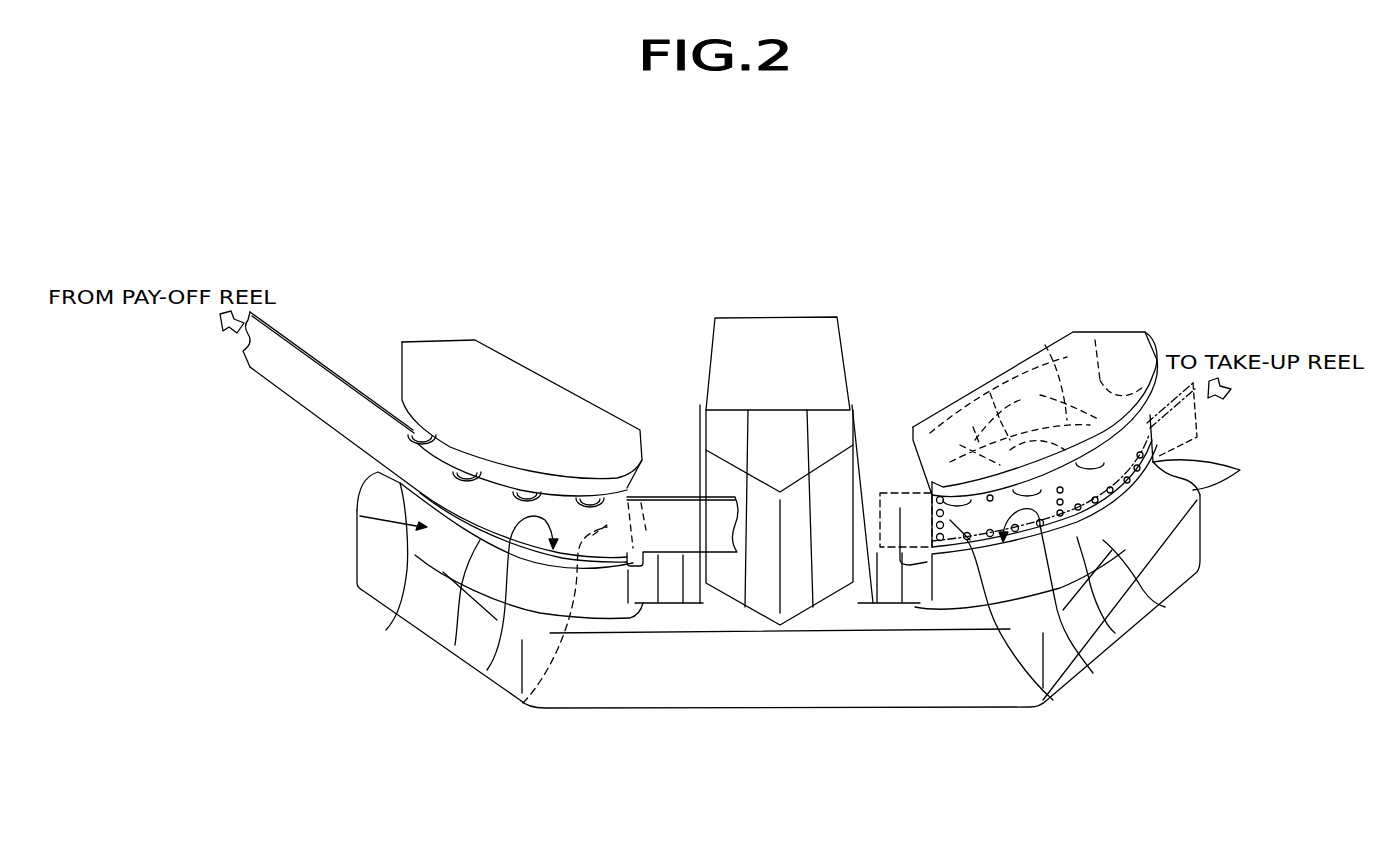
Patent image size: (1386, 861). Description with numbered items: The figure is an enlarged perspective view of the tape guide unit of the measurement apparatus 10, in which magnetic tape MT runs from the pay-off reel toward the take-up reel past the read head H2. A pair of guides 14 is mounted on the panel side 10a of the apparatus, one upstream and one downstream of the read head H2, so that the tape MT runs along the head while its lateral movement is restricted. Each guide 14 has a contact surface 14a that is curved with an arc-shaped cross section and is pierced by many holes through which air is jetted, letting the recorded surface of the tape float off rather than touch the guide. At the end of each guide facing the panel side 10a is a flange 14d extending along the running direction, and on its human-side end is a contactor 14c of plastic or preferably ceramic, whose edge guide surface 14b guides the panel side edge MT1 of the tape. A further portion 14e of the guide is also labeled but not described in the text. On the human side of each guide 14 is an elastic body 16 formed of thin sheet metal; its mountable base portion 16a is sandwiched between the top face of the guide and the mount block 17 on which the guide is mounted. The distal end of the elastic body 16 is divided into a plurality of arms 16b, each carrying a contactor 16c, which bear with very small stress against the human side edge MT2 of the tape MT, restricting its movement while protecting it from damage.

The measurement apparatus 10 is at (810, 254).
The panel side 10a is at (1000, 758).
The guide 14 is at (443, 537).
The contact surface 14a is at (523, 703).
The edge guide surface 14b is at (487, 670).
The contactor 14c is at (455, 645).
The flange 14d is at (386, 630).
The projection 14e is at (1238, 470).
The elastic body 16 is at (1086, 357).
The mountable base portion 16a is at (990, 393).
The arm 16b is at (973, 427).
The contactor 16c is at (1090, 462).
The mount block 17 is at (1125, 343).
The read head H2 is at (832, 435).
The magnetic tape MT is at (272, 357).
The panel side edge MT1 is at (263, 377).
The human side edge MT2 is at (309, 353).